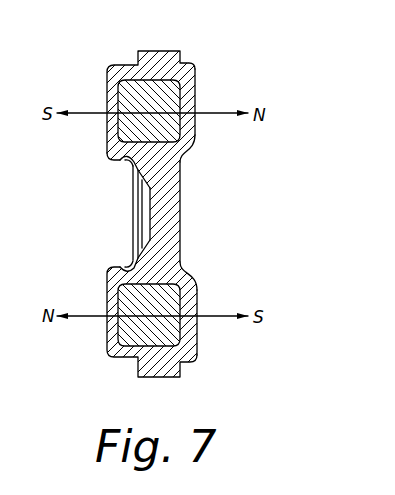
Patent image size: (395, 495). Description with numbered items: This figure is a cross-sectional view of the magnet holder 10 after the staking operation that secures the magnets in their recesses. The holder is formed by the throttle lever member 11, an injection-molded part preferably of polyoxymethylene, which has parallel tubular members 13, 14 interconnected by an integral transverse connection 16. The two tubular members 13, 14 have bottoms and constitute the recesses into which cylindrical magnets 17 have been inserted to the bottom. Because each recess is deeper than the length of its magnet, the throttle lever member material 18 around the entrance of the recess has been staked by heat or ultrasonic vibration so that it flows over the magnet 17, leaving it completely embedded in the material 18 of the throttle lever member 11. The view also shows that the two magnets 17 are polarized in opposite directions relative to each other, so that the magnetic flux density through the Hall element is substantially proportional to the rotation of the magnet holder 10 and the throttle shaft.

The magnet holder 10 is at (112, 173).
The throttle lever member 11 is at (131, 212).
The tubular member 13 is at (140, 78).
The tubular member 14 is at (127, 350).
The transverse connection 16 is at (178, 212).
The magnet 17 is at (133, 100).
The throttle lever member material 18 is at (188, 83).